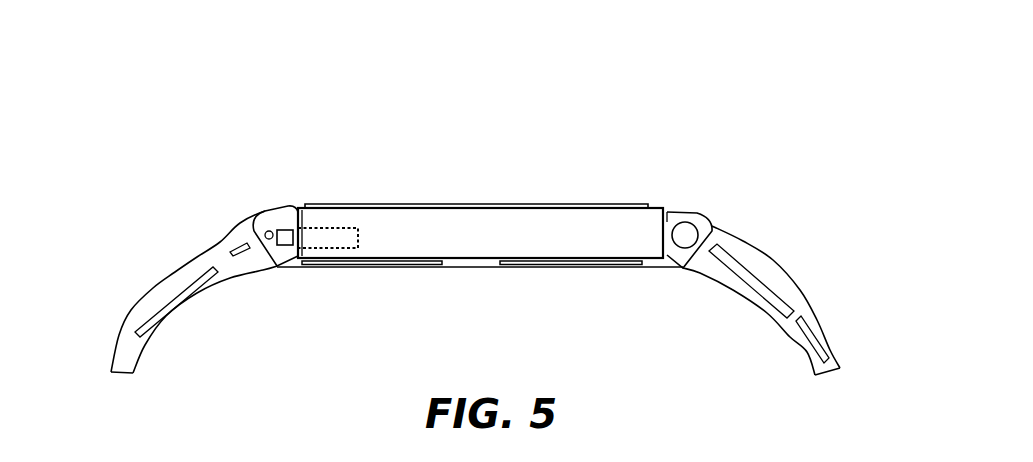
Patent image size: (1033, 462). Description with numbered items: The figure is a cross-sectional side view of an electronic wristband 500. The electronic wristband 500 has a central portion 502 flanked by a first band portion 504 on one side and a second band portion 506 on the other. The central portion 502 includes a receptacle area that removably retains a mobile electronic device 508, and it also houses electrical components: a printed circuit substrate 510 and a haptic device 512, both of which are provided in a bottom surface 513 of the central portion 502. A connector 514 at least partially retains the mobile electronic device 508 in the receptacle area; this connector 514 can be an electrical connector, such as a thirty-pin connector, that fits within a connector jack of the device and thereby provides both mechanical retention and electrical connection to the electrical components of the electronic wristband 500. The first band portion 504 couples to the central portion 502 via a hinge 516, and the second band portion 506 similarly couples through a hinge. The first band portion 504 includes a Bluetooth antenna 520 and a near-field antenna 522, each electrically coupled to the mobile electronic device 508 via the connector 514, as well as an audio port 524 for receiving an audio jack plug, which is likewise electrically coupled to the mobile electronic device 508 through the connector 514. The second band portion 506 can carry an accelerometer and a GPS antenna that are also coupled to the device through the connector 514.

The electronic wristband 500 is at (341, 106).
The central portion 502 is at (472, 193).
The first band portion 504 is at (840, 357).
The second band portion 506 is at (120, 347).
The mobile electronic device 508 is at (522, 244).
The printed circuit substrate 510 is at (370, 266).
The haptic device 512 is at (577, 266).
The bottom surface 513 is at (489, 277).
The connector 514 is at (282, 246).
The hinge 516 is at (275, 222).
The Bluetooth antenna 520 is at (246, 245).
The near-field antenna 522 is at (167, 303).
The audio port 524 is at (688, 230).